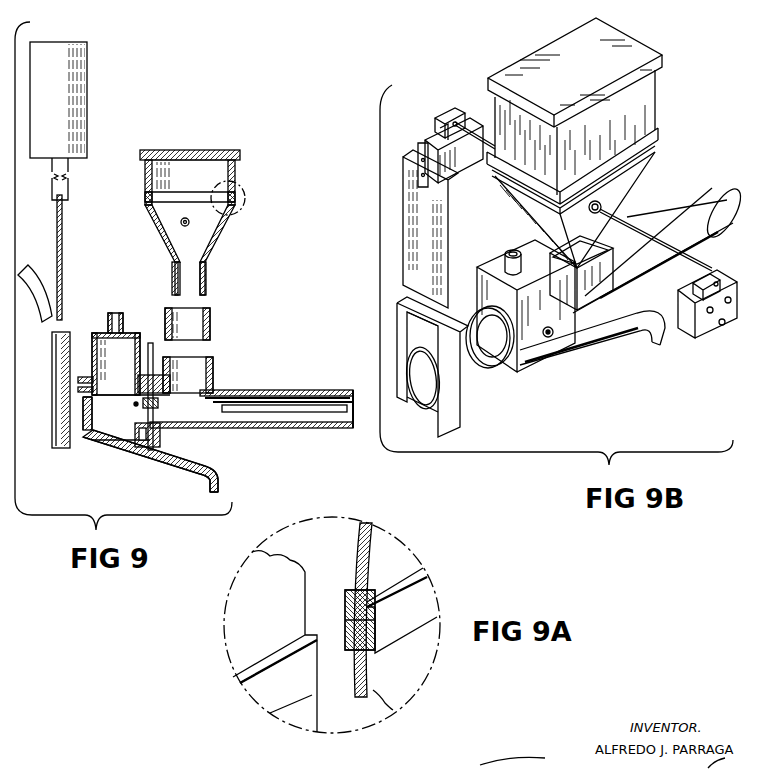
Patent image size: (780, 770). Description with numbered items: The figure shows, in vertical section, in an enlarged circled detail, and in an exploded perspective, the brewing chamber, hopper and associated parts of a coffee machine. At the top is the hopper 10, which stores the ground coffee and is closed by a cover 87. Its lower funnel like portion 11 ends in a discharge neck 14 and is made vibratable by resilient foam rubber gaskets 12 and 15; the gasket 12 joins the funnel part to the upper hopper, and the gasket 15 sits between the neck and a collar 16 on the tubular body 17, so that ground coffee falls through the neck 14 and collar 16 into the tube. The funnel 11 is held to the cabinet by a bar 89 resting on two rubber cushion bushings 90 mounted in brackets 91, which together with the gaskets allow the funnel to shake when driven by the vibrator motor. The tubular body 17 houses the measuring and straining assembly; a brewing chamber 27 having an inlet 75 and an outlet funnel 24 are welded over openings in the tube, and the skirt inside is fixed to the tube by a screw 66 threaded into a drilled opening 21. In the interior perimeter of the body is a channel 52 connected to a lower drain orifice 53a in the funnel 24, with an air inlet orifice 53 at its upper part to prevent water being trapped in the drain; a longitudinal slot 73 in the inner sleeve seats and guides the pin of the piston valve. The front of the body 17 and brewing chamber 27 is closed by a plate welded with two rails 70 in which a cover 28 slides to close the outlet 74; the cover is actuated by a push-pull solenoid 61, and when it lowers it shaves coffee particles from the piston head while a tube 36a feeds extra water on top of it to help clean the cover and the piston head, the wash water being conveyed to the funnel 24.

In FIG. 9, the hopper 10 is at (205, 186).
In FIG. 9A, the hopper 10 is at (280, 636).
In FIG. 9B, the hopper 10 is at (642, 108).
In FIG. 9, the funnel like portion 11 is at (204, 238).
In FIG. 9A, the funnel like portion 11 is at (297, 720).
In FIG. 9B, the funnel like portion 11 is at (620, 205).
In FIG. 9, the foam rubber gasket 12 is at (145, 200).
In FIG. 9A, the foam rubber gasket 12 is at (347, 595).
In FIG. 9B, the foam rubber gasket 12 is at (656, 132).
In FIG. 9, the discharge neck 14 is at (179, 271).
In FIG. 9, the foam rubber gasket 15 is at (200, 332).
In FIG. 9B, the foam rubber gasket 15 is at (554, 252).
In FIG. 9, the collar 16 is at (200, 383).
In FIG. 9B, the collar 16 is at (605, 280).
In FIG. 9, the tubular body 17 is at (252, 397).
In FIG. 9B, the tubular body 17 is at (689, 240).
In FIG. 9, the drilled opening 21 is at (134, 406).
In FIG. 9, the outlet funnel 24 is at (203, 470).
In FIG. 9B, the outlet funnel 24 is at (605, 334).
In FIG. 9, the brewing chamber 27 is at (129, 388).
In FIG. 9B, the brewing chamber 27 is at (540, 289).
In FIG. 9, the cover 28 is at (63, 262).
In FIG. 9B, the cover 28 is at (438, 222).
In FIG. 9, the tube 36a is at (41, 263).
In FIG. 9, the channel 52 is at (151, 410).
In FIG. 9, the air inlet orifice 53 is at (152, 340).
In FIG. 9, the drain orifice 53a is at (150, 446).
In FIG. 9, the solenoid 61 is at (72, 96).
In FIG. 9B, the screw 66 is at (549, 340).
In FIG. 9, the rail 70 is at (53, 358).
In FIG. 9B, the rail 70 is at (398, 322).
In FIG. 9, the longitudinal slot 73 is at (316, 407).
In FIG. 9, the outlet 74 is at (84, 407).
In FIG. 9, the inlet 75 is at (118, 316).
In FIG. 9B, the inlet 75 is at (514, 259).
In FIG. 9, the cover 87 is at (190, 150).
In FIG. 9B, the cover 87 is at (555, 75).
In FIG. 9B, the bar 89 is at (470, 144).
In FIG. 9B, the rubber cushion bushing 90 is at (444, 114).
In FIG. 9B, the bracket 91 is at (476, 126).